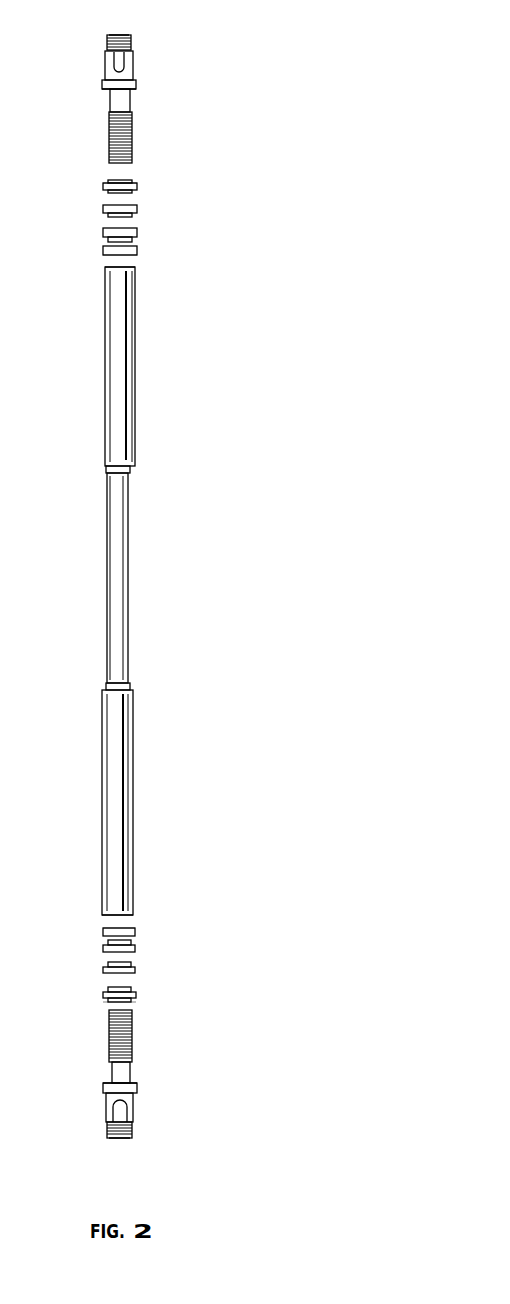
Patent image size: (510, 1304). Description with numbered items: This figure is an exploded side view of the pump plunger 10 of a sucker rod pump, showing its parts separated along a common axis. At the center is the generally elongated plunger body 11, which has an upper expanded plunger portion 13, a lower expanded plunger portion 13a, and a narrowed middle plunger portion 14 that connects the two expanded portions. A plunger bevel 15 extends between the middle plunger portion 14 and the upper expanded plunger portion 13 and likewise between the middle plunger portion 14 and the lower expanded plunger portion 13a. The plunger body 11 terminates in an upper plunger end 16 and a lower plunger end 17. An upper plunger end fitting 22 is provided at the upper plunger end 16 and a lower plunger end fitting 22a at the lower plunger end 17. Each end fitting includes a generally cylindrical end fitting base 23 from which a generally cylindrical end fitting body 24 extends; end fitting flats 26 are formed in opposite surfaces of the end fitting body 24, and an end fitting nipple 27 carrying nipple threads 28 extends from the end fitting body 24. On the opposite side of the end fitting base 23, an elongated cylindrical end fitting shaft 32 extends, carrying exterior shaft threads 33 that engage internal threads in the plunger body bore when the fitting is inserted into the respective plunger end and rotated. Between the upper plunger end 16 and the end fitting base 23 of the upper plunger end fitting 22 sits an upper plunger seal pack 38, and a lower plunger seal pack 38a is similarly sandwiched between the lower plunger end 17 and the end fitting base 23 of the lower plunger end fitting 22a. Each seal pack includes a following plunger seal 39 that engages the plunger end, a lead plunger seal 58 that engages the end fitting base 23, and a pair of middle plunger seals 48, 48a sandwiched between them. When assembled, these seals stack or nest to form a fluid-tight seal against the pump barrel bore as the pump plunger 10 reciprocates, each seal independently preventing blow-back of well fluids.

The pump plunger 10 is at (192, 357).
The plunger body 11 is at (133, 423).
The upper expanded plunger portion 13 is at (118, 445).
The lower expanded plunger portion 13a is at (125, 768).
The middle plunger portion 14 is at (122, 578).
The plunger bevel 15 is at (126, 472).
The upper plunger end 16 is at (128, 268).
The lower plunger end 17 is at (130, 917).
The upper plunger end fitting 22 is at (143, 93).
The lower plunger end fitting 22a is at (173, 1092).
The end fitting base 23 is at (103, 88).
The end fitting body 24 is at (102, 81).
The end fitting flats 26 is at (120, 63).
The end fitting nipple 27 is at (130, 34).
The nipple threads 28 is at (108, 44).
The end fitting shaft 32 is at (120, 100).
The exterior shaft threads 33 is at (108, 137).
The upper plunger seal pack 38 is at (82, 225).
The lower plunger seal pack 38a is at (78, 942).
The following plunger seal 39 is at (152, 249).
The middle plunger seal 48 is at (153, 230).
The middle plunger seal 48a is at (153, 203).
The lead plunger seal 58 is at (145, 168).